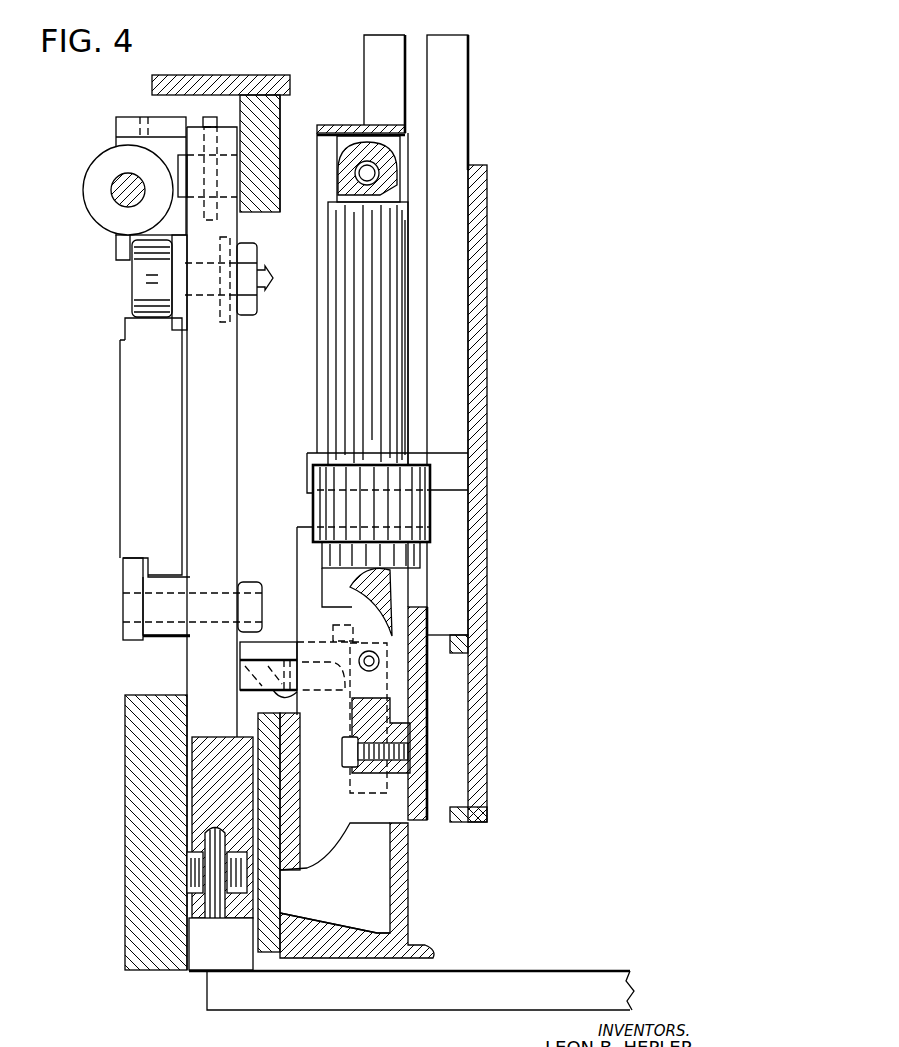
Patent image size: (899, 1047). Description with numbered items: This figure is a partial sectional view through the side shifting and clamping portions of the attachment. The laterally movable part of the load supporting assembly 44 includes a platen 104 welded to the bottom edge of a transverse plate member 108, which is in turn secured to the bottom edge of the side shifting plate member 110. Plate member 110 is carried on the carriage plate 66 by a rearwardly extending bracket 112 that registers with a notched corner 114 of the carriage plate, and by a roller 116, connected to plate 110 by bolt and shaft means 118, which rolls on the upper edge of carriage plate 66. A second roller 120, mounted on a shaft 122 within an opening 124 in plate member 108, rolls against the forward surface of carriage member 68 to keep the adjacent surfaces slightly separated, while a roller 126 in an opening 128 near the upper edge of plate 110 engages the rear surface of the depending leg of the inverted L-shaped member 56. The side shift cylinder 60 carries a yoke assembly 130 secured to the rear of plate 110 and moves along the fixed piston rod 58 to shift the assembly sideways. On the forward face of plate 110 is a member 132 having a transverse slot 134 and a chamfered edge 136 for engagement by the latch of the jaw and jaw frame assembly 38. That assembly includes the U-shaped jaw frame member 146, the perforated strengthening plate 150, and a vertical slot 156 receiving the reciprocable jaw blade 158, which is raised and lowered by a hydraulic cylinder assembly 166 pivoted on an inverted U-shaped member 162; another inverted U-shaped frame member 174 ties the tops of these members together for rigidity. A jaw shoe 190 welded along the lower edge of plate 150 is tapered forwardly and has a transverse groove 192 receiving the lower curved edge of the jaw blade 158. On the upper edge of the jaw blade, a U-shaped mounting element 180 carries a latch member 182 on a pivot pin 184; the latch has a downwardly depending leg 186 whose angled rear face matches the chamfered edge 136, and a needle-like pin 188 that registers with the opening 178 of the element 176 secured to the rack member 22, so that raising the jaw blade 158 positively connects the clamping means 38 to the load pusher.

The rack member 22 is at (490, 352).
The jaw and jaw frame assembly 38 is at (422, 840).
The load supporting assembly 44 is at (205, 1012).
The inverted L-shaped member 56 is at (255, 80).
The piston rod 58 is at (118, 181).
The side shift cylinder 60 is at (92, 191).
The carriage plate 66 is at (128, 465).
The carriage member 68 is at (130, 785).
The platen 104 is at (345, 1003).
The transverse plate member 108 is at (205, 960).
The side shifting plate member 110 is at (228, 500).
The bracket 112 is at (128, 579).
The notched corner 114 is at (128, 560).
The roller 116 is at (136, 299).
The bolt and shaft means 118 is at (259, 269).
The roller 120 is at (190, 870).
The shaft 122 is at (214, 924).
The opening 124 is at (247, 880).
The roller 126 is at (280, 139).
The opening 128 is at (280, 103).
The yoke assembly 130 is at (160, 117).
The forwardly and transversely extending member 132 is at (280, 701).
The slot 134 is at (238, 676).
The chamfered edge 136 is at (332, 668).
The jaw frame member 146 is at (428, 765).
The perforated strengthening plate member 150 is at (270, 945).
The slot 156 is at (400, 708).
The jaw blade 158 is at (400, 911).
The inverted U-shaped member 162 is at (312, 343).
The hydraulic cylinder assembly 166 is at (343, 399).
The inverted U-shaped frame member 174 is at (366, 46).
The element 176 is at (453, 463).
The opening 178 is at (330, 472).
The U-shaped mounting element 180 is at (376, 692).
The latch member 182 is at (272, 645).
The pivot pin 184 is at (380, 661).
The downwardly depending leg 186 is at (242, 650).
The needle-like pin 188 is at (337, 618).
The jaw shoe 190 is at (305, 925).
The transverse groove 192 is at (387, 933).